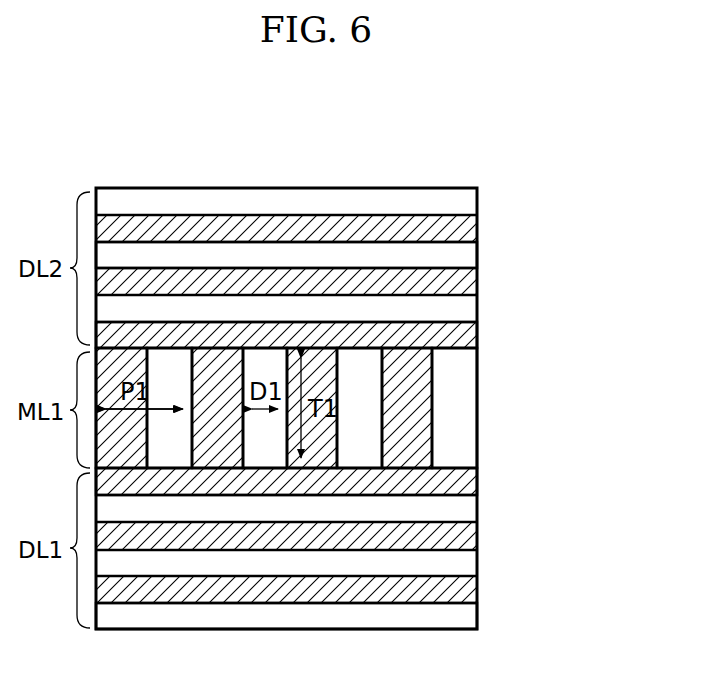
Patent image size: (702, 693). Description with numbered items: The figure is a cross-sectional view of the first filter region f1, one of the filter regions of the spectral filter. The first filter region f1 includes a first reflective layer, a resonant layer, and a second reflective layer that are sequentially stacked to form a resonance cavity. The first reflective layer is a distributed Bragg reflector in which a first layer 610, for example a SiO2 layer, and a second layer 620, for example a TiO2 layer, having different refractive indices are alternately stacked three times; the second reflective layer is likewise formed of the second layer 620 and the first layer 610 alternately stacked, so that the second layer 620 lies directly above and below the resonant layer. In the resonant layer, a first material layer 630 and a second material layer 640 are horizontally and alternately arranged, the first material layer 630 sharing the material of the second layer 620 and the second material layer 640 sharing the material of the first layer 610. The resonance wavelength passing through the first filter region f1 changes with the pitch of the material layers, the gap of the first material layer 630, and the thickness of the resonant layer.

The first layer 610 is at (477, 254).
The second layer 620 is at (477, 336).
The first material layer 630 is at (218, 368).
The second material layer 640 is at (362, 370).
The first filter region f1 is at (544, 181).